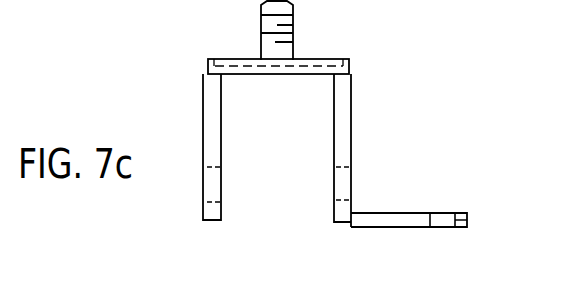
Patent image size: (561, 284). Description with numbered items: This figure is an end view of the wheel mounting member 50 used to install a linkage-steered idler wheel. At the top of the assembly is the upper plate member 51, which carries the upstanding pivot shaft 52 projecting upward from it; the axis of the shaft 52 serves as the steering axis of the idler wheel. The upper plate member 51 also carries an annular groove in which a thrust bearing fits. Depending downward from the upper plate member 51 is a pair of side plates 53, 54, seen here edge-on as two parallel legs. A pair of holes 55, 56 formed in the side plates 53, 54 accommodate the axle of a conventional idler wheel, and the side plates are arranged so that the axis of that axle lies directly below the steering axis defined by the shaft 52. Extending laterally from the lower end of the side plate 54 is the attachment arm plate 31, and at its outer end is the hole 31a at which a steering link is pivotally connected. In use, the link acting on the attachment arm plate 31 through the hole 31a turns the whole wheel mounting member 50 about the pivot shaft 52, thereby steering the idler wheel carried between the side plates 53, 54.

The wheel mounting member 50 is at (303, 52).
The upper plate member 51 is at (208, 65).
The upstanding pivot shaft 52 is at (261, 43).
The side plate 53 is at (203, 115).
The side plate 54 is at (352, 106).
The hole 55 is at (213, 204).
The hole 56 is at (334, 167).
The attachment arm plate 31 is at (367, 227).
The hole 31a is at (467, 217).